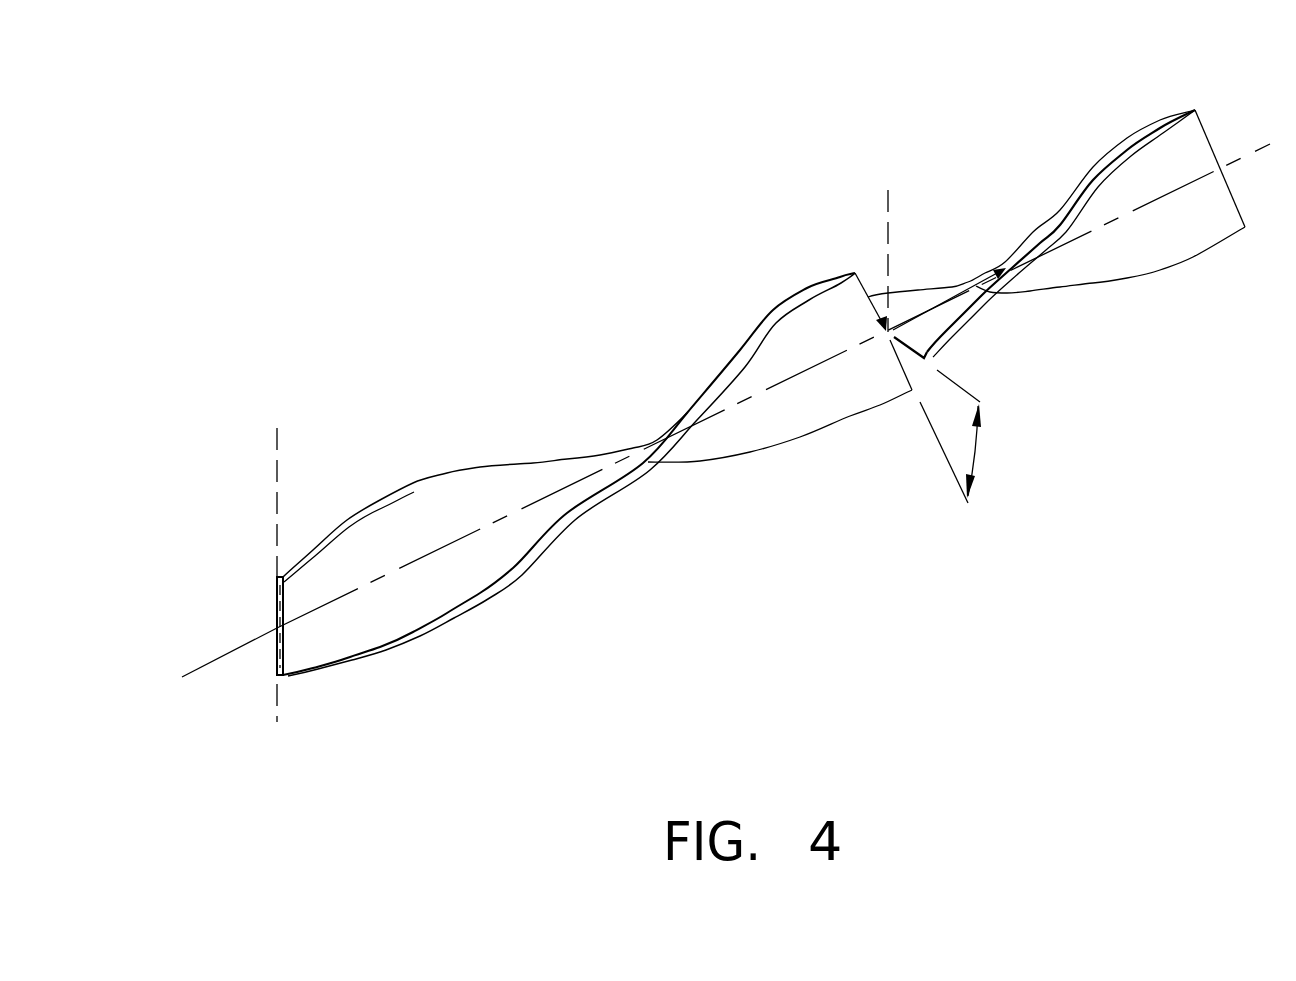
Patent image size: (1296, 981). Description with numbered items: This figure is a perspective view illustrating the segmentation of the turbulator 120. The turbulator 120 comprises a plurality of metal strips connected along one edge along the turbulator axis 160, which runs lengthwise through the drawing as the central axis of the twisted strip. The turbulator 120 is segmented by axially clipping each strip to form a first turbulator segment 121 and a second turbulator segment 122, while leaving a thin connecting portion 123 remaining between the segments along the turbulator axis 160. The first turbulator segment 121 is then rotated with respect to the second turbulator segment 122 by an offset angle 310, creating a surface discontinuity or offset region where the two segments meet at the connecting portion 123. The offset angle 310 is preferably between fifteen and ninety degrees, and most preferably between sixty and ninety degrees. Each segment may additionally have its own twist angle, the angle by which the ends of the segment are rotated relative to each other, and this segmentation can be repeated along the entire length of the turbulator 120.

The turbulator 120 is at (1104, 116).
The first turbulator segment 121 is at (374, 698).
The second turbulator segment 122 is at (1148, 322).
The connecting portion 123 is at (885, 338).
The turbulator axis 160 is at (237, 650).
The offset angle 310 is at (973, 450).